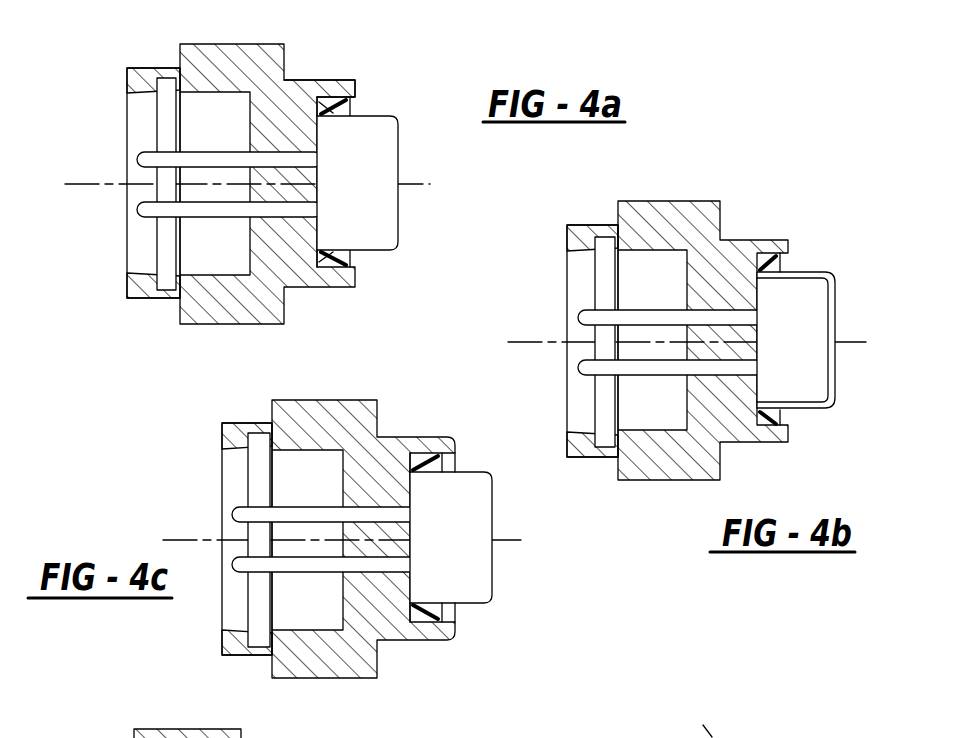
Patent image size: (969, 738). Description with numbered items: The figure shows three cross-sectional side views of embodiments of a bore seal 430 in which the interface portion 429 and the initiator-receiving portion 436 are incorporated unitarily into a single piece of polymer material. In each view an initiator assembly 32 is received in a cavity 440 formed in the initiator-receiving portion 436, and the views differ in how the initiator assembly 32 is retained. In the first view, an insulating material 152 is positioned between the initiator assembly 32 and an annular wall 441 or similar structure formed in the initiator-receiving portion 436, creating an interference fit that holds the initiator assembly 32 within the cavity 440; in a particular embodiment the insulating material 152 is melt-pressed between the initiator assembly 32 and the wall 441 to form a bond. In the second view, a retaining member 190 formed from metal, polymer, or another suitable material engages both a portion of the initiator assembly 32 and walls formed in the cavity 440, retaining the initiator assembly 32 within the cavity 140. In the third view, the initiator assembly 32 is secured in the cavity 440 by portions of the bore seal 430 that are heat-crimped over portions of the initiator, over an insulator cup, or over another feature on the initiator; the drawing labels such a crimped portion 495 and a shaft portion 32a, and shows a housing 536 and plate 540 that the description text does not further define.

In FIG. 4a, the initiator assembly 32 is at (363, 150).
In FIG. 4b, the initiator assembly 32 is at (803, 308).
In FIG. 4c, the initiator assembly 32 is at (470, 483).
In FIG. 4b, the shaft portion 32a is at (815, 732).
In FIG. 4b, the cavity 140 is at (753, 392).
In FIG. 4a, the insulating material 152 is at (337, 96).
In FIG. 4b, the insulating material 152 is at (763, 255).
In FIG. 4c, the insulating material 152 is at (430, 458).
In FIG. 4b, the retaining member 190 is at (812, 409).
In FIG. 4a, the interface portion 429 is at (140, 122).
In FIG. 4b, the interface portion 429 is at (583, 268).
In FIG. 4c, the interface portion 429 is at (237, 475).
In FIG. 4a, the bore seal 430 is at (180, 322).
In FIG. 4b, the bore seal 430 is at (618, 480).
In FIG. 4c, the bore seal 430 is at (272, 680).
In FIG. 4a, the initiator-receiving portion 436 is at (293, 268).
In FIG. 4b, the initiator-receiving portion 436 is at (735, 256).
In FIG. 4c, the initiator-receiving portion 436 is at (380, 605).
In FIG. 4a, the cavity 440 is at (333, 264).
In FIG. 4b, the cavity 440 is at (768, 340).
In FIG. 4c, the cavity 440 is at (432, 612).
In FIG. 4a, the annular wall 441 is at (325, 87).
In FIG. 4c, the cap 495 is at (448, 617).
In FIG. 4c, the housing 536 is at (302, 728).
In FIG. 4b, the plate 540 is at (695, 716).
In FIG. 4c, the plate 540 is at (182, 735).